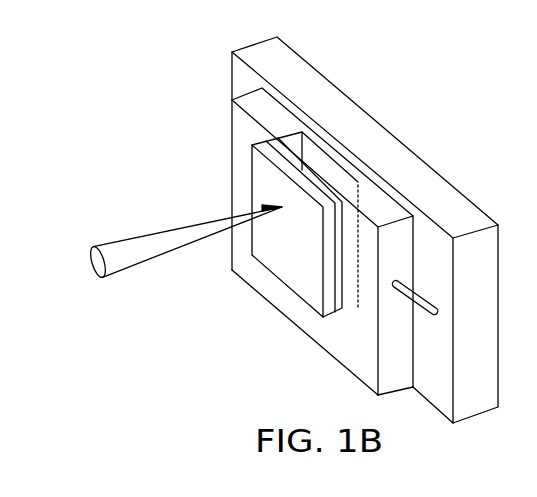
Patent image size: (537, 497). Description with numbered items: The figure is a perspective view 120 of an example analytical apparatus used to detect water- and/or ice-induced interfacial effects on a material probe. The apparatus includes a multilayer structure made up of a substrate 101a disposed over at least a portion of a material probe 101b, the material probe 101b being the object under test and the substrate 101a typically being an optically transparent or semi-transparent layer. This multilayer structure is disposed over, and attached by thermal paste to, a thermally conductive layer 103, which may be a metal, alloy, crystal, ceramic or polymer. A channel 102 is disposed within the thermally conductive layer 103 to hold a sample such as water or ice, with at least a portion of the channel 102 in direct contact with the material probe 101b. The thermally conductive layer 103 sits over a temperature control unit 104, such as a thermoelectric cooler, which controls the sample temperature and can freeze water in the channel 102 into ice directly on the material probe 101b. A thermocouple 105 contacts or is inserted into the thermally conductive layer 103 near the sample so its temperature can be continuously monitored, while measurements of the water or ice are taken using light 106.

The perspective view 120 is at (170, 81).
The substrate 101a is at (298, 263).
The material probe 101b is at (263, 136).
The channel 102 is at (323, 160).
The thermally conductive layer 103 is at (294, 310).
The temperature control unit 104 is at (477, 207).
The thermocouple 105 is at (405, 290).
The light 106 is at (158, 229).